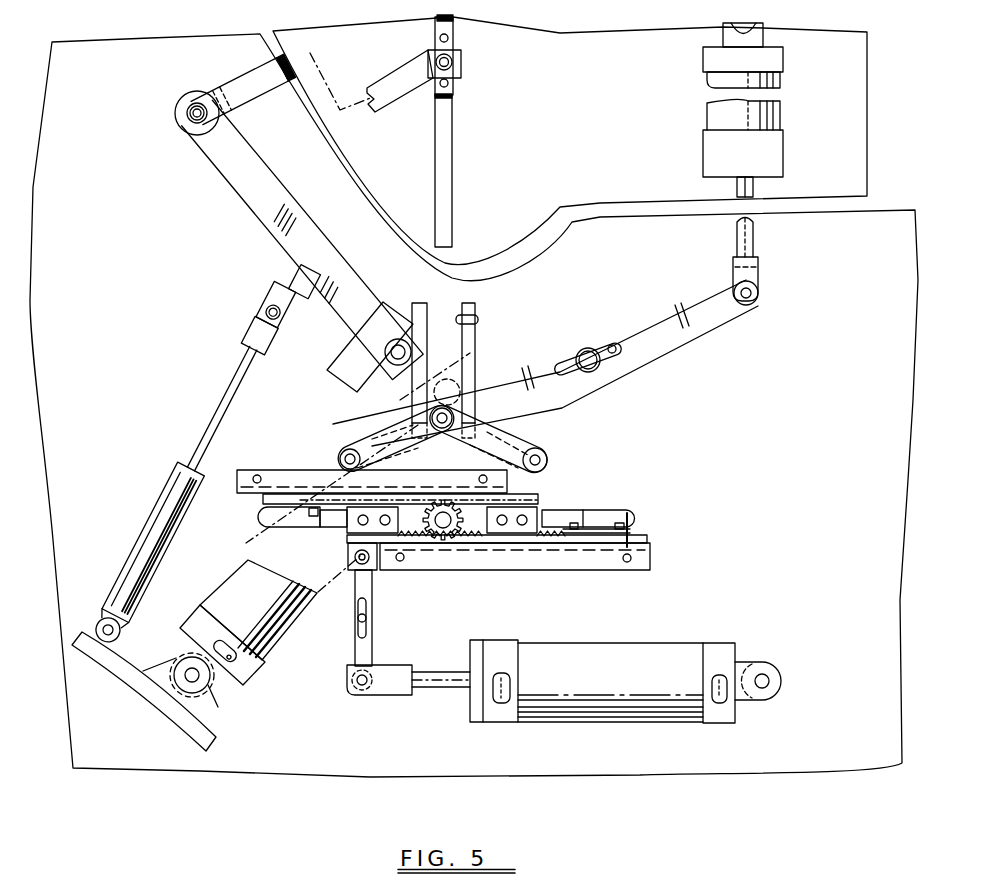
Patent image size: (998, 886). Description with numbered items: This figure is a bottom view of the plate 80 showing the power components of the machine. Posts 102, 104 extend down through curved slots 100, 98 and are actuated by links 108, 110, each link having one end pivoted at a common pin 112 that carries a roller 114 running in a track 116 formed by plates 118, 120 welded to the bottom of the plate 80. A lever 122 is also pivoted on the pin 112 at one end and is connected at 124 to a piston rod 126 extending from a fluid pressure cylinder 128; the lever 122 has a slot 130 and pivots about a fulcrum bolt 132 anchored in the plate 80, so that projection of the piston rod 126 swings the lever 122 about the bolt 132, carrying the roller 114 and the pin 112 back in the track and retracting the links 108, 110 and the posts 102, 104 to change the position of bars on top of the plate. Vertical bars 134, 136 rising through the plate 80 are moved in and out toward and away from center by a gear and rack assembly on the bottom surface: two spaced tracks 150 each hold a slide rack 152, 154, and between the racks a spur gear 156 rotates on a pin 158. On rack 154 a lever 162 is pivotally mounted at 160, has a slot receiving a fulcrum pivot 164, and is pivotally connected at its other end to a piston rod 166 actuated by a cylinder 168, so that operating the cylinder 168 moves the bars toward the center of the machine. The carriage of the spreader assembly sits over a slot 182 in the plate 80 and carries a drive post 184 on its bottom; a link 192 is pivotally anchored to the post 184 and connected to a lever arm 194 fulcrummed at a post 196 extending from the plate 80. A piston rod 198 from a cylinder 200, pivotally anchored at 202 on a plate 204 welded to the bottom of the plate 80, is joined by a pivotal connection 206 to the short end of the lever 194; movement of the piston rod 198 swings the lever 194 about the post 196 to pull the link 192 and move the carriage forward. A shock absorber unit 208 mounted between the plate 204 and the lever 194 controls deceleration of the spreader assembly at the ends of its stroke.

The plate 80 is at (878, 457).
The curved slot 98 is at (495, 416).
The curved slot 100 is at (388, 418).
The post 102 is at (549, 460).
The post 104 is at (341, 454).
The link 108 is at (497, 447).
The link 110 is at (368, 437).
The common pin 112 is at (452, 407).
The roller 114 is at (505, 330).
The track 116 is at (470, 362).
The plate 118 is at (470, 303).
The plate 120 is at (420, 303).
The lever 122 is at (704, 322).
The connection 124 is at (752, 302).
The piston rod 126 is at (746, 242).
The fluid pressure cylinder 128 is at (716, 115).
The slot 130 is at (613, 345).
The fulcrum bolt 132 is at (590, 361).
The vertical bar 134 is at (600, 517).
The vertical bar 136 is at (283, 520).
The track 150 is at (506, 480).
The slide rack 152 is at (540, 497).
The slide rack 154 is at (631, 535).
The spur gear 156 is at (454, 530).
The pin 158 is at (440, 527).
The pivot 160 is at (368, 562).
The lever 162 is at (364, 653).
The fulcrum pivot 164 is at (357, 620).
The piston rod 166 is at (392, 684).
The cylinder 168 is at (630, 654).
The slot 182 is at (448, 115).
The drive post 184 is at (456, 54).
The link 192 is at (254, 80).
The lever arm 194 is at (248, 182).
The post 196 is at (386, 352).
The piston rod 198 is at (383, 437).
The cylinder 200 is at (228, 596).
The pivotal anchor 202 is at (200, 678).
The plate 204 is at (167, 698).
The pivotal connection 206 is at (500, 345).
The shock absorber unit 208 is at (173, 507).